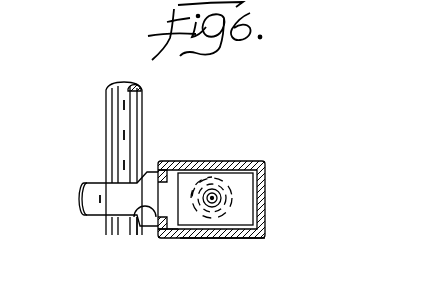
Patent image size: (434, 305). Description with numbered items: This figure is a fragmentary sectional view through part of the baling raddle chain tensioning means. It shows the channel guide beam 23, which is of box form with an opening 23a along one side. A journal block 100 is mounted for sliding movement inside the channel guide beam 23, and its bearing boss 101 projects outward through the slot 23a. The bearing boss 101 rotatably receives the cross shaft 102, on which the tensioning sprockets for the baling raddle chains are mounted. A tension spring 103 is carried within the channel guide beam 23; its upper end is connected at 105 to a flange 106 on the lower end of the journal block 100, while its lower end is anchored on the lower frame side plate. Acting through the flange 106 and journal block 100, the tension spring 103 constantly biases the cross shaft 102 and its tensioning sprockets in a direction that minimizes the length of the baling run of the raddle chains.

The channel guide beam 23 is at (242, 167).
The opening 23a is at (135, 217).
The journal block 100 is at (173, 222).
The bearing boss 101 is at (97, 192).
The cross shaft 102 is at (134, 107).
The tension spring 103 is at (227, 243).
The upper end connection of tension spring 105 is at (211, 190).
The flange 106 is at (245, 185).